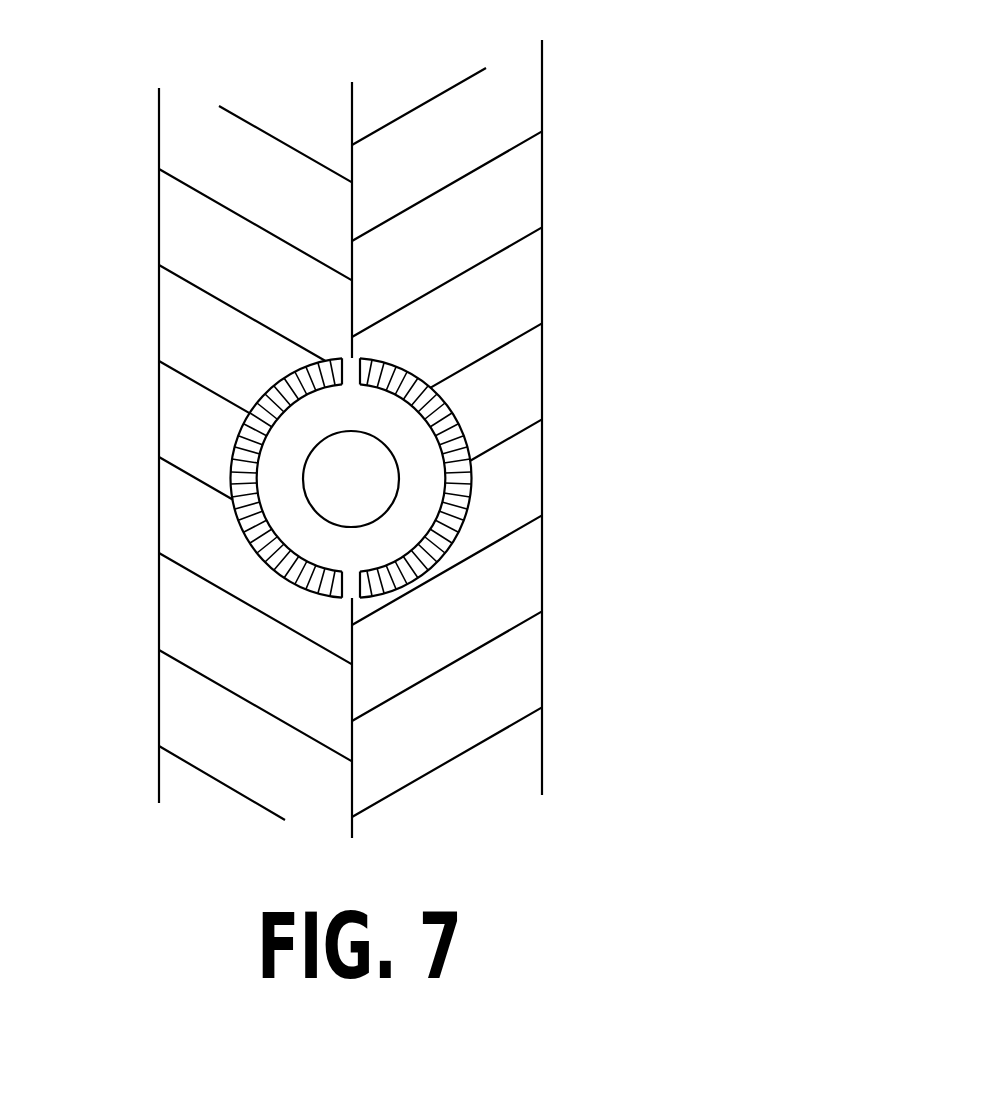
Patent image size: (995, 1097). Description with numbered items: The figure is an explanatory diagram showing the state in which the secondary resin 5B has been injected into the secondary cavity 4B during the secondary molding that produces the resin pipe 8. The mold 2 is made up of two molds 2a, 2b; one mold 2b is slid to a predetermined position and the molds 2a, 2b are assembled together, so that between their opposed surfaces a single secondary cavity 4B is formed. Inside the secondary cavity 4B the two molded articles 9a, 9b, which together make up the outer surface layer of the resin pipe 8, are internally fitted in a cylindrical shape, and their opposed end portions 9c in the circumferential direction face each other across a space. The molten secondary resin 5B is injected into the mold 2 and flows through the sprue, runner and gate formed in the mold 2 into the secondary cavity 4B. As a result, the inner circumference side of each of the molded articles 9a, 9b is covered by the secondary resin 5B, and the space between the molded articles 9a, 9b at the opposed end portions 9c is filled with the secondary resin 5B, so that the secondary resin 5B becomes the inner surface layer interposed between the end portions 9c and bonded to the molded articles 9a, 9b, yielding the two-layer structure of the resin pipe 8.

The mold 2 is at (361, 430).
The mold 2a is at (175, 228).
The mold 2b is at (520, 197).
The resin pipe 8 is at (347, 480).
The molded article 9a is at (237, 450).
The molded article 9b is at (463, 452).
The opposed end portion 9c is at (360, 370).
The secondary resin 5B is at (283, 546).
The secondary cavity 4B is at (435, 527).